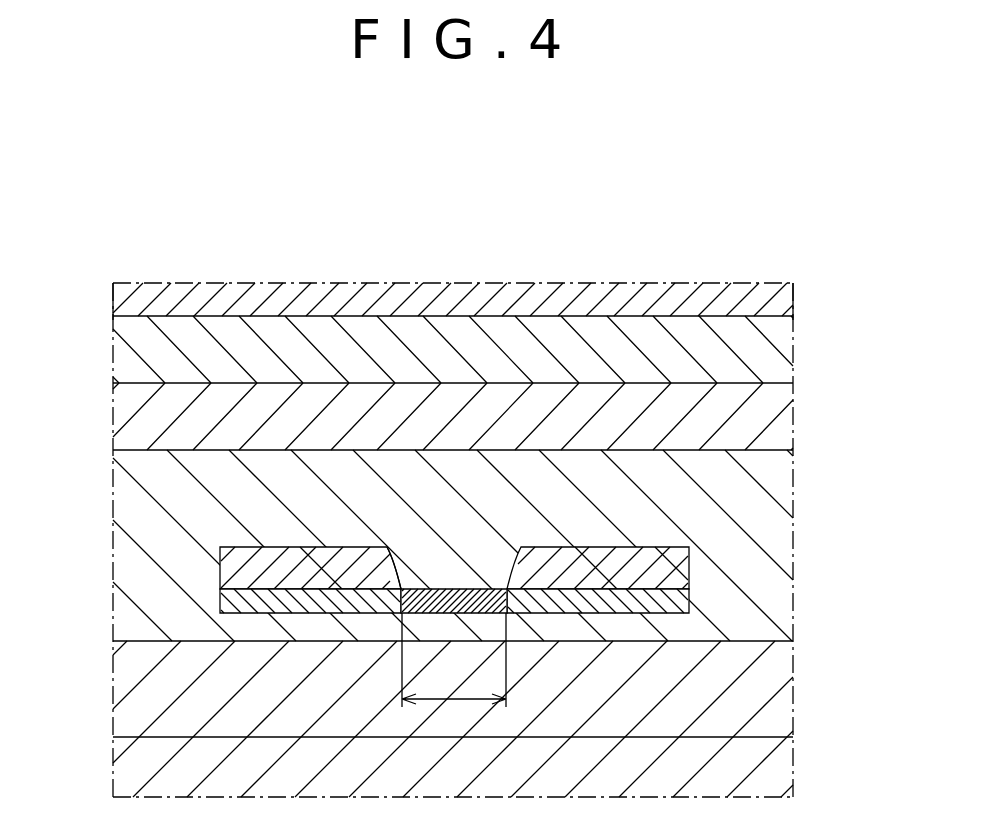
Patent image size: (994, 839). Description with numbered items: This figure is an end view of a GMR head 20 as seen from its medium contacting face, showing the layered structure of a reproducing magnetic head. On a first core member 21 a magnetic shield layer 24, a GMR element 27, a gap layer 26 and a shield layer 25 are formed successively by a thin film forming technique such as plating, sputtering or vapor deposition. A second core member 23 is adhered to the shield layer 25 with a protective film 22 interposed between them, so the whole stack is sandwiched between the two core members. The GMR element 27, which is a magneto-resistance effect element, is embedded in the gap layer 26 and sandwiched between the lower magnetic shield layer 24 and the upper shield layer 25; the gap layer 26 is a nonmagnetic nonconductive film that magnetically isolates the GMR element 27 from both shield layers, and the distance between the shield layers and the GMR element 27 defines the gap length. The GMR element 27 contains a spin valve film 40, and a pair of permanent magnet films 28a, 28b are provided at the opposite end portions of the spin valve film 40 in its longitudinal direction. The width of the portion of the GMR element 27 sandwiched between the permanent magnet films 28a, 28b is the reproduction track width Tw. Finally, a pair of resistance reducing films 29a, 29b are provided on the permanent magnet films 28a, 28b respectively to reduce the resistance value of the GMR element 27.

The GMR head 20 is at (460, 260).
The first core member 21 is at (752, 772).
The protective film 22 is at (768, 356).
The second core member 23 is at (768, 300).
The magnetic shield layer 24 is at (752, 687).
The shield layer 25 is at (765, 416).
The gap layer 26 is at (765, 490).
The GMR element 27 is at (477, 570).
The permanent magnet film 28a is at (220, 606).
The permanent magnet film 28b is at (689, 602).
The resistance reducing film 29a is at (220, 565).
The resistance reducing film 29b is at (689, 562).
The spin valve film 40 is at (420, 607).
The reproduction track width Tw is at (454, 660).